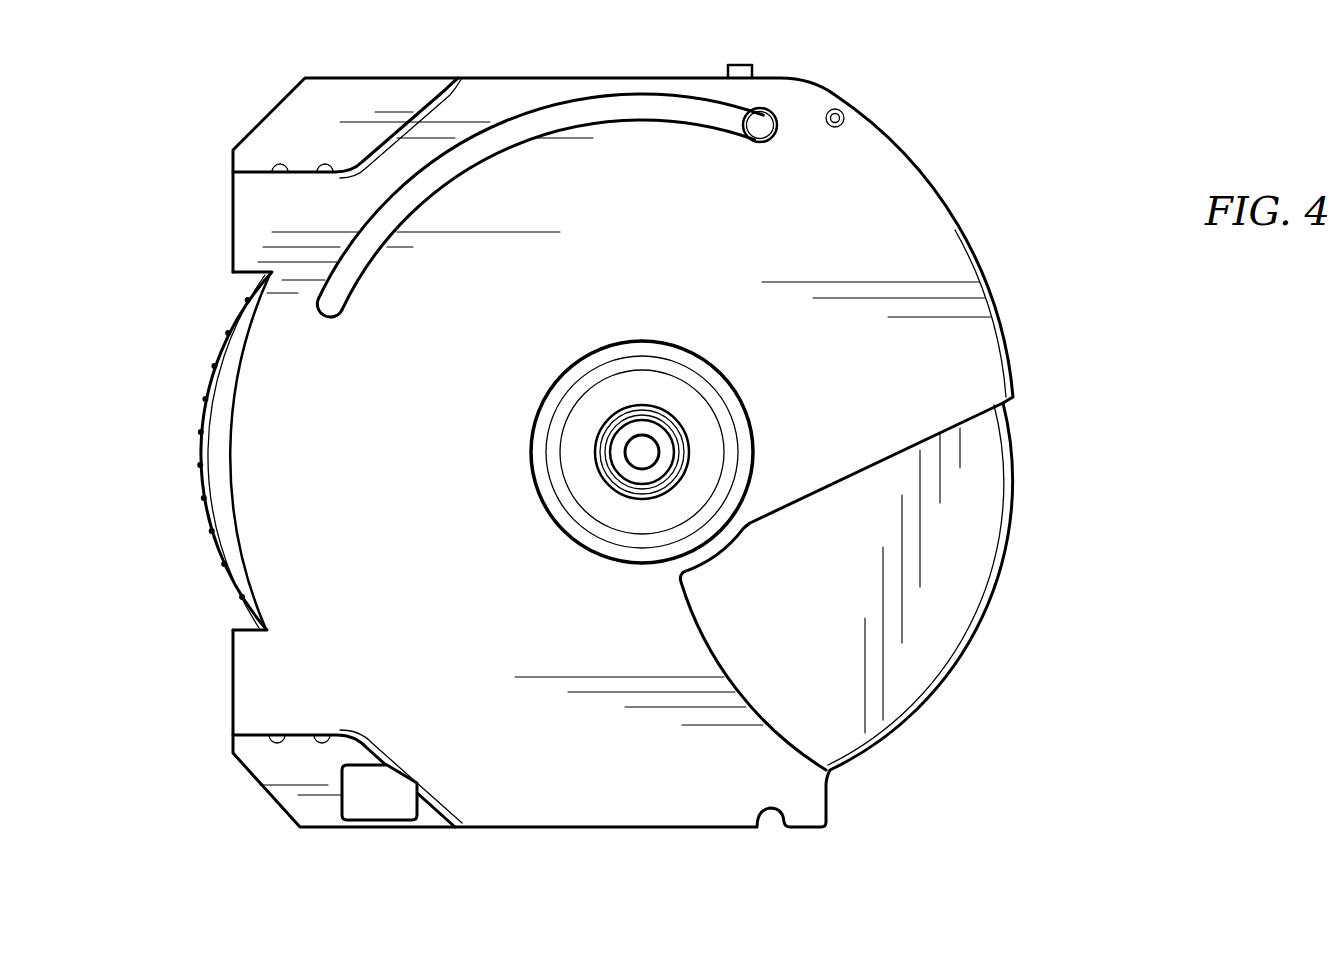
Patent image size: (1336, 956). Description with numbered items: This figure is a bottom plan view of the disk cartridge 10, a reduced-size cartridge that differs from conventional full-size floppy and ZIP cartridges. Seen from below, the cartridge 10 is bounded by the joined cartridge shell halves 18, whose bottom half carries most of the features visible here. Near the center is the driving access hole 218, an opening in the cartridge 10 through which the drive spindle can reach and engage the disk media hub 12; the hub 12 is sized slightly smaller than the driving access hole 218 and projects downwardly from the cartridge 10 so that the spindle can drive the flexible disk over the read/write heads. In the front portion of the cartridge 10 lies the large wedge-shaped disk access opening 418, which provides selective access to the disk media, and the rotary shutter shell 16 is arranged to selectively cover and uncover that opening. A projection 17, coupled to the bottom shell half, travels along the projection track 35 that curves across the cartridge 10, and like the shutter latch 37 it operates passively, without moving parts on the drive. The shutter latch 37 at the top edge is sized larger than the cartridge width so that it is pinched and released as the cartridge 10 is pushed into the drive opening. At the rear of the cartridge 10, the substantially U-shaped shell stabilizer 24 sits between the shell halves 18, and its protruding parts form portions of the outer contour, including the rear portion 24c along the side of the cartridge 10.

The disk cartridge 10 is at (1025, 823).
The disk media hub 12 is at (617, 392).
The rotary shutter shell 16 is at (816, 608).
The projection 17 is at (755, 122).
The cartridge shell halves 18 is at (508, 745).
The shell stabilizer 24 is at (258, 780).
The rear portion 24c is at (218, 460).
The projection track 35 is at (627, 105).
The shutter latch 37 is at (750, 66).
The driving access hole 218 is at (738, 378).
The disk access opening 418 is at (986, 620).